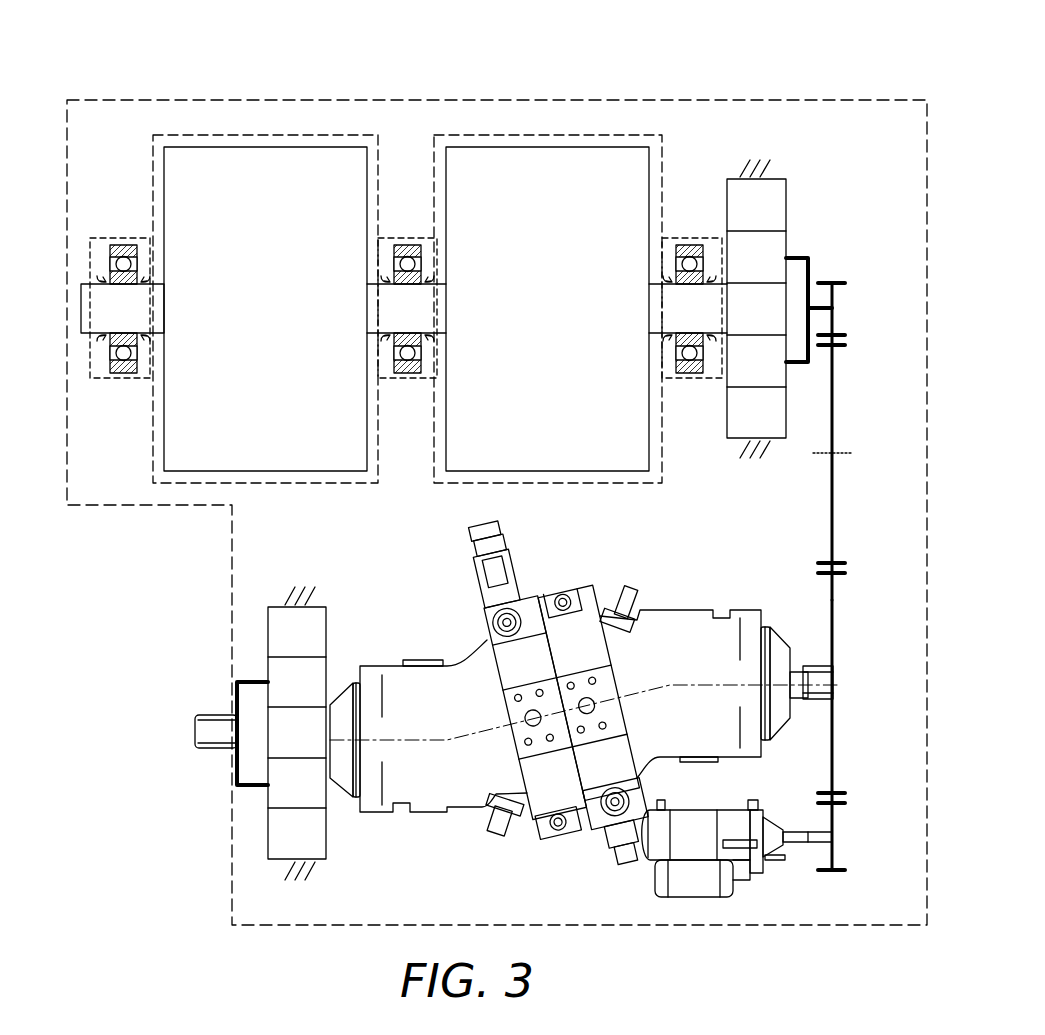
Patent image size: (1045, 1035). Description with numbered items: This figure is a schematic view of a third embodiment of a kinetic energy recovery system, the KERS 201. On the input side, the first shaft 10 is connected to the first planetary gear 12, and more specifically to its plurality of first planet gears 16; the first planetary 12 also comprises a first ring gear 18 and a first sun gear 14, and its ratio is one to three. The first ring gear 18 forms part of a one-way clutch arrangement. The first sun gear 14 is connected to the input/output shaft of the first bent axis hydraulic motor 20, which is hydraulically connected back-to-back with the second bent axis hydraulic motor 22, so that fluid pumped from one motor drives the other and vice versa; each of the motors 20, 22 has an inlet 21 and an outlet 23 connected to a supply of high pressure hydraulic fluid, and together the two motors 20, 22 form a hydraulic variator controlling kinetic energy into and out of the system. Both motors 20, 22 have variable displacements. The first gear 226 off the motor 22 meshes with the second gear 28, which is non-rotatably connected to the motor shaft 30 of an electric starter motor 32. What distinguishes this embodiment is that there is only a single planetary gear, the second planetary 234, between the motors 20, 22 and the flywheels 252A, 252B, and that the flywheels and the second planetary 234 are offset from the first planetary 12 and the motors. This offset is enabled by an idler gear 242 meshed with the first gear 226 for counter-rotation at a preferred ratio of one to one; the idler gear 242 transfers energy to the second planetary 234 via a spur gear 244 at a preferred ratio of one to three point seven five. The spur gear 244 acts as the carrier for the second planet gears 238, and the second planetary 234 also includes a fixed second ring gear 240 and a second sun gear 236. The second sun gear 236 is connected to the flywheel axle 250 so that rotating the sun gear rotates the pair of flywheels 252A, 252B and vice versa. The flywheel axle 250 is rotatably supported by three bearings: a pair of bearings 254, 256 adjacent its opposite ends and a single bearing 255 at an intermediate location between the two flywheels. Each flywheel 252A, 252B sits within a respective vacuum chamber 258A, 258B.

The kinetic energy recovery system 201 is at (90, 75).
The second flywheel 252B is at (223, 168).
The vacuum chamber 258B is at (342, 135).
The first flywheel 252A is at (505, 168).
The vacuum chamber 258A is at (624, 135).
The flywheel axle 250 is at (82, 308).
The bearing 256 is at (123, 355).
The bearing 255 is at (407, 355).
The bearing 254 is at (689, 355).
The second planetary gear 234 is at (816, 284).
The second ring gear 240 is at (786, 196).
The second planet gears 238 is at (786, 242).
The second sun gear 236 is at (786, 292).
The spur gear 244 is at (832, 300).
The idler gear 242 is at (832, 505).
The first planetary gear 12 is at (286, 708).
The first planet gears 16 is at (277, 670).
The first sun gear 14 is at (277, 748).
The first shaft 10 is at (197, 733).
The first ring gear 18 is at (326, 831).
The first bent axis hydraulic motor 20 is at (435, 833).
The inlet 21 is at (483, 562).
The outlet 23 is at (625, 586).
The second bent axis hydraulic motor 22 is at (693, 596).
The first gear 226 is at (836, 740).
The second gear 28 is at (836, 833).
The motor shaft 30 is at (818, 847).
The electric starter motor 32 is at (695, 884).